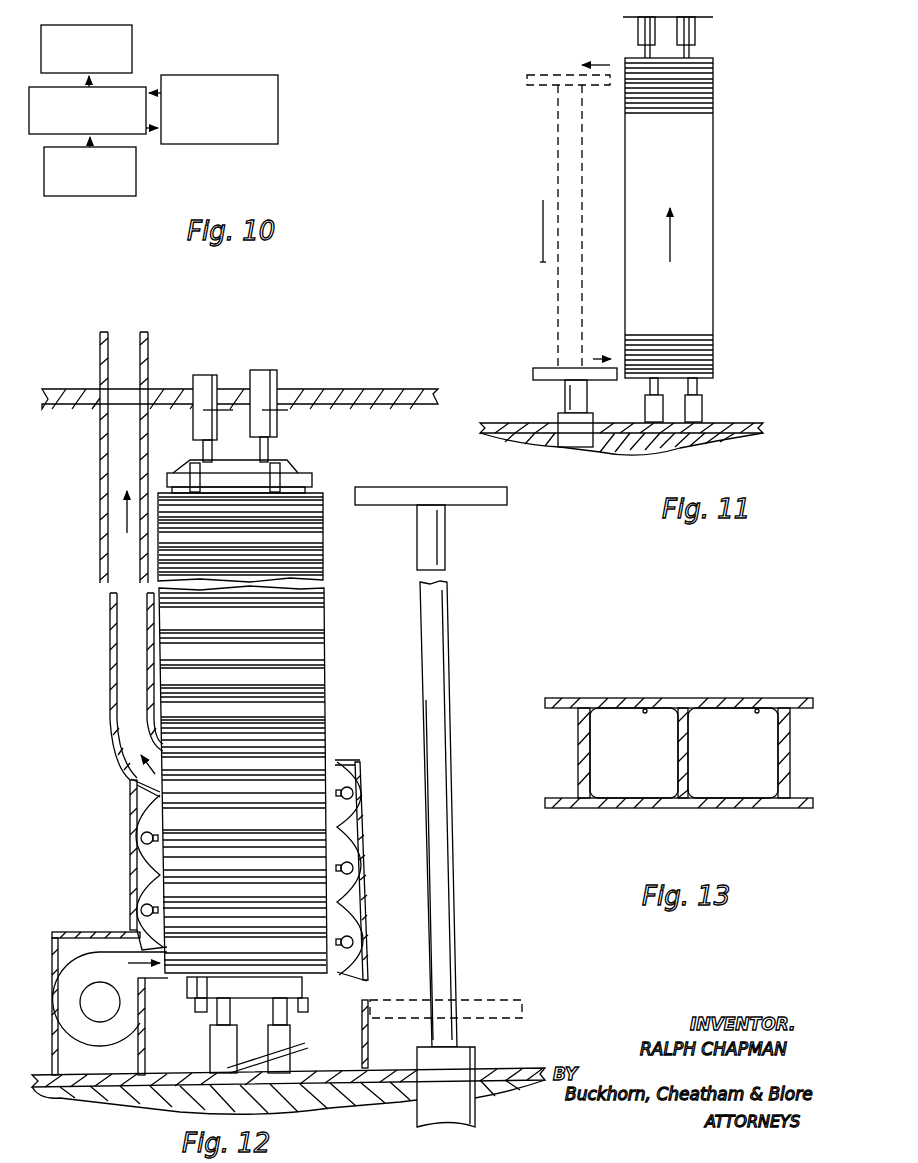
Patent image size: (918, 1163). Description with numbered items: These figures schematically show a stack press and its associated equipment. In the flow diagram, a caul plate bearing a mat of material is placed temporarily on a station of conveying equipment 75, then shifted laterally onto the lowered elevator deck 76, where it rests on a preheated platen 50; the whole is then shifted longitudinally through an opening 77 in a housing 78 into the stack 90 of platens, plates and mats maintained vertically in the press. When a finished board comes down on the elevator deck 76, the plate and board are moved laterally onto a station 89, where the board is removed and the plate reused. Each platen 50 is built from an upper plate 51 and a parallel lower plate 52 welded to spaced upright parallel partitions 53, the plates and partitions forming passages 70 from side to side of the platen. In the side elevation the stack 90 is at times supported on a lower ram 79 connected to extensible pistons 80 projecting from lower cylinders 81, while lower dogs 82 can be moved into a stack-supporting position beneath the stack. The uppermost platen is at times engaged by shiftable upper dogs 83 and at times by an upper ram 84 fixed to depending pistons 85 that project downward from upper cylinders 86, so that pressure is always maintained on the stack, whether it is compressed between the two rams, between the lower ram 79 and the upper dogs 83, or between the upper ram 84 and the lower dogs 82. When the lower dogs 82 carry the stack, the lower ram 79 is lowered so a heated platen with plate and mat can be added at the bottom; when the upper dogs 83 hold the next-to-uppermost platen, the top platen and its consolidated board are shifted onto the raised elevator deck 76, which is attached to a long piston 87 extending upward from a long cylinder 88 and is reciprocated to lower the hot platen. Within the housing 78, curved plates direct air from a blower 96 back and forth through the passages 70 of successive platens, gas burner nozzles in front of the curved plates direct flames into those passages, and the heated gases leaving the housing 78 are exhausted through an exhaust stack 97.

In FIG. 11, the platen 50 is at (715, 358).
In FIG. 13, the platen 50 is at (679, 743).
In FIG. 12, the platen 50 is at (313, 650).
In FIG. 13, the upper plate 51 is at (618, 705).
In FIG. 13, the lower plate 52 is at (640, 806).
In FIG. 13, the partitions 53 is at (585, 770).
In FIG. 13, the passages 70 is at (648, 710).
In FIG. 10, the station of conveying equipment 75 is at (114, 188).
In FIG. 10, the elevator deck 76 is at (48, 128).
In FIG. 11, the elevator deck 76 is at (541, 370).
In FIG. 12, the elevator deck 76 is at (507, 494).
In FIG. 12, the opening 77 is at (368, 980).
In FIG. 12, the housing 78 is at (362, 767).
In FIG. 12, the lower ram 79 is at (187, 988).
In FIG. 12, the extensible pistons 80 is at (272, 1010).
In FIG. 12, the lower cylinders 81 is at (272, 1037).
In FIG. 12, the lower dogs 82 is at (197, 1011).
In FIG. 12, the upper dogs 83 is at (193, 473).
In FIG. 12, the upper ram 84 is at (305, 481).
In FIG. 12, the depending pistons 85 is at (258, 447).
In FIG. 12, the upper cylinders 86 is at (258, 375).
In FIG. 12, the long piston 87 is at (440, 697).
In FIG. 12, the long cylinder 88 is at (462, 1055).
In FIG. 10, the station 89 is at (120, 47).
In FIG. 10, the stack 90 is at (272, 116).
In FIG. 11, the stack 90 is at (692, 218).
In FIG. 12, the stack 90 is at (275, 733).
In FIG. 12, the blower 96 is at (67, 1005).
In FIG. 12, the exhaust stack 97 is at (103, 545).